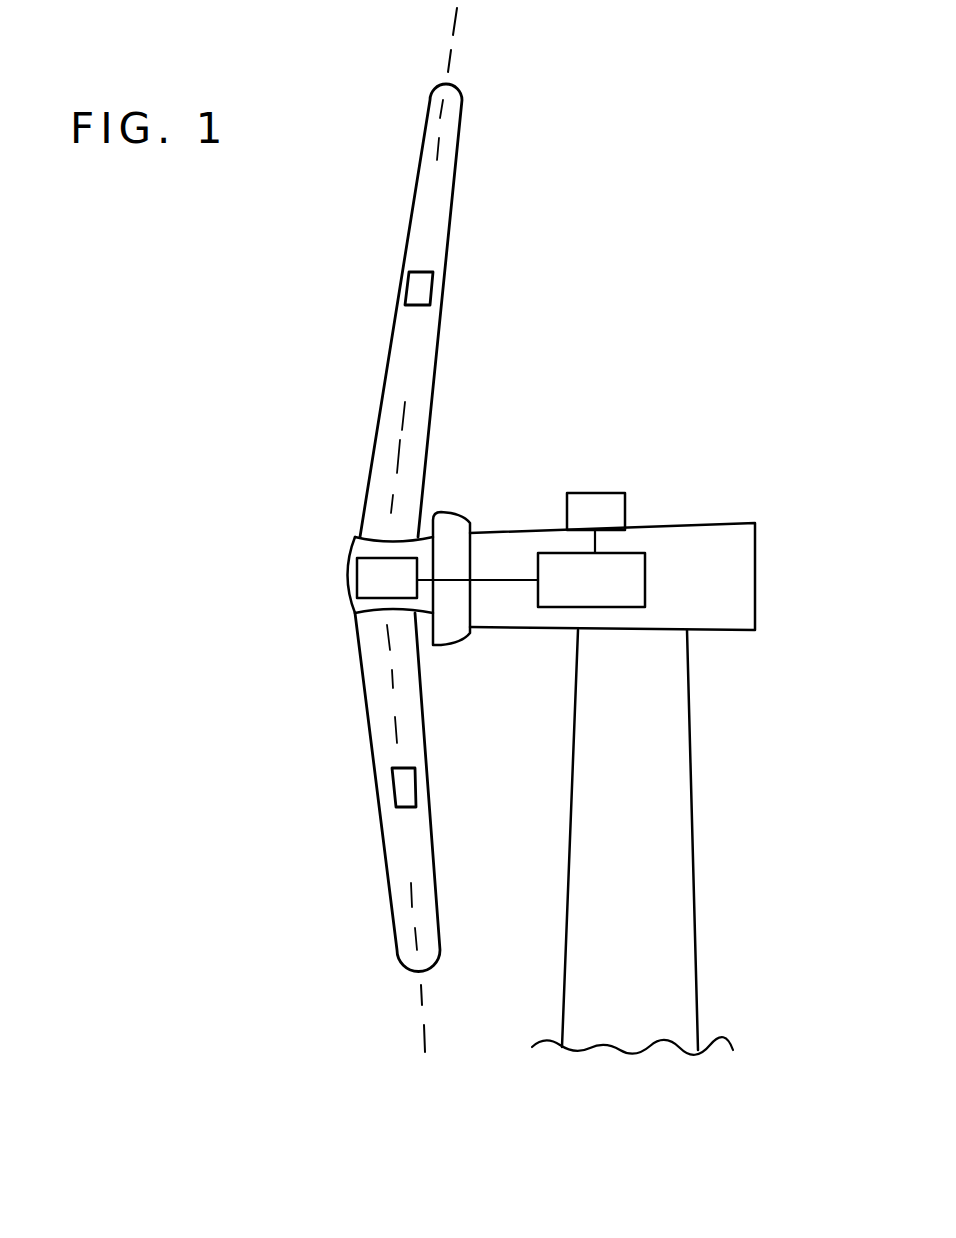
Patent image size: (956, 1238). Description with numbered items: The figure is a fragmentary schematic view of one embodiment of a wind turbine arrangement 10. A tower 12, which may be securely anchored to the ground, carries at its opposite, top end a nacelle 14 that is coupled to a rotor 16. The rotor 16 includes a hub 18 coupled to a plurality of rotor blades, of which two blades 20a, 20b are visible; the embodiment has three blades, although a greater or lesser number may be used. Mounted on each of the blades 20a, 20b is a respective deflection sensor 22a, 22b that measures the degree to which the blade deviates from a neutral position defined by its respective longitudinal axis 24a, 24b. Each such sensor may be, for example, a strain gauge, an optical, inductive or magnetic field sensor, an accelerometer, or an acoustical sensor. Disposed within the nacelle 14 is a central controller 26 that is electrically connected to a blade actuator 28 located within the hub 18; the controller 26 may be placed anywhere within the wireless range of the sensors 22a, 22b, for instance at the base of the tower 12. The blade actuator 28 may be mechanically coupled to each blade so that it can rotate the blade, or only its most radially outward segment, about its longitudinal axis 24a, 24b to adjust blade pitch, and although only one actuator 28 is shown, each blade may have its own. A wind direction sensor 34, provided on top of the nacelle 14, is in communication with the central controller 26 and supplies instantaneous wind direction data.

The wind turbine arrangement 10 is at (750, 160).
The tower 12 is at (652, 911).
The nacelle 14 is at (700, 543).
The rotor 16 is at (232, 588).
The hub 18 is at (343, 597).
The rotor blade 20a is at (437, 193).
The rotor blade 20b is at (405, 898).
The deflection sensor 22a is at (435, 288).
The deflection sensor 22b is at (417, 787).
The longitudinal axis 24a is at (449, 66).
The longitudinal axis 24b is at (421, 1000).
The central controller 26 is at (560, 607).
The blade actuator 28 is at (406, 594).
The wind direction sensor 34 is at (614, 527).